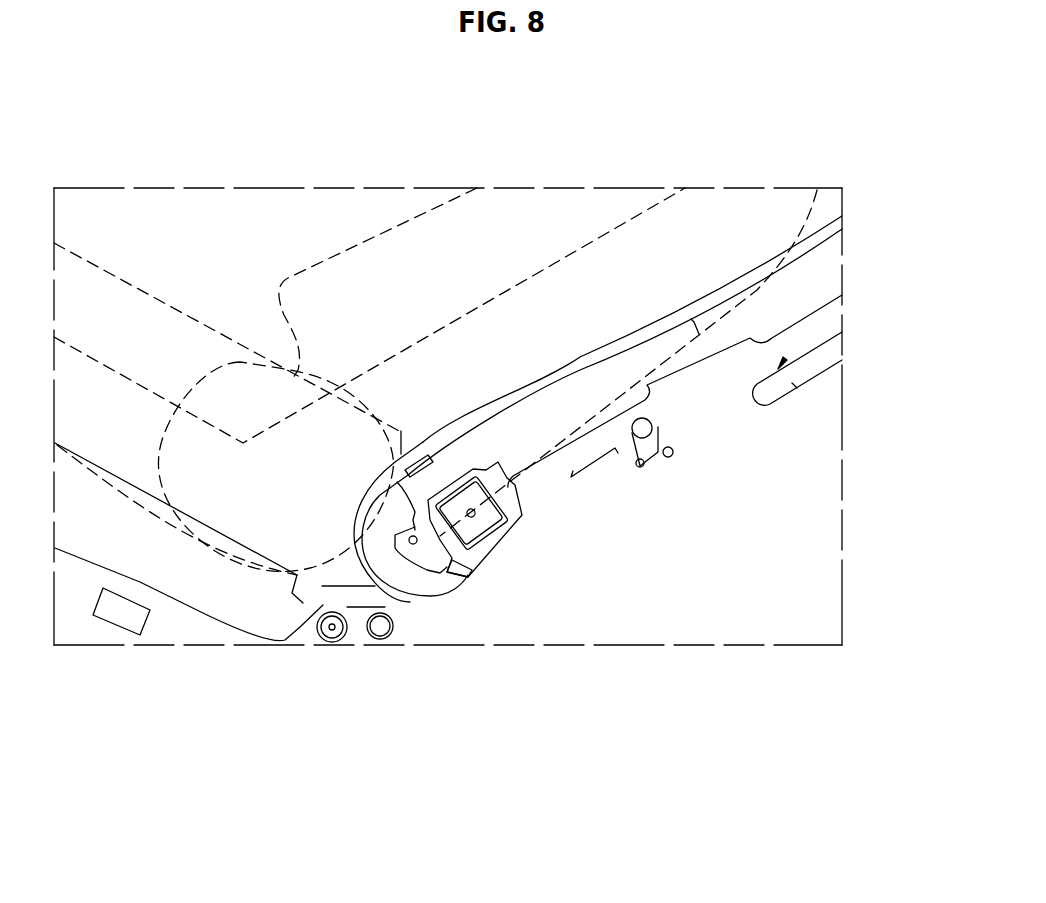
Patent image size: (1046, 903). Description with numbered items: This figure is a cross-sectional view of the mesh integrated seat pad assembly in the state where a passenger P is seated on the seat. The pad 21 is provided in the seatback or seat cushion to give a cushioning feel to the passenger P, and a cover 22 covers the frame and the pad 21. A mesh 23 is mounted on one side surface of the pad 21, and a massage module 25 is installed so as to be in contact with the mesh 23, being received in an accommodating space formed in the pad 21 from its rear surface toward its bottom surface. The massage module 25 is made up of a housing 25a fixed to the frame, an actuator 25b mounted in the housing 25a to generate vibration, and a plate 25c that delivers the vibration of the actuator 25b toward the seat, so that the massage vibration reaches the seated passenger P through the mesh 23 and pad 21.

The passenger P is at (393, 262).
The pad 21 is at (642, 372).
The cover 22 is at (772, 340).
The mesh 23 is at (435, 458).
The massage module 25 is at (687, 629).
The housing 25a is at (503, 553).
The actuator 25b is at (500, 540).
The plate 25c is at (510, 490).